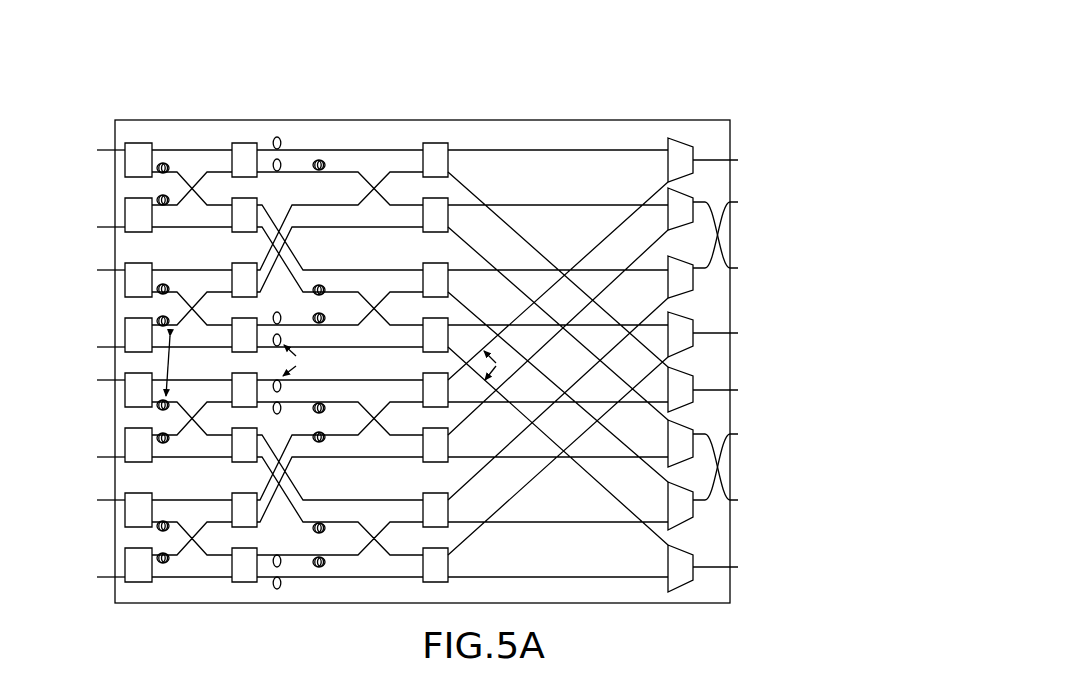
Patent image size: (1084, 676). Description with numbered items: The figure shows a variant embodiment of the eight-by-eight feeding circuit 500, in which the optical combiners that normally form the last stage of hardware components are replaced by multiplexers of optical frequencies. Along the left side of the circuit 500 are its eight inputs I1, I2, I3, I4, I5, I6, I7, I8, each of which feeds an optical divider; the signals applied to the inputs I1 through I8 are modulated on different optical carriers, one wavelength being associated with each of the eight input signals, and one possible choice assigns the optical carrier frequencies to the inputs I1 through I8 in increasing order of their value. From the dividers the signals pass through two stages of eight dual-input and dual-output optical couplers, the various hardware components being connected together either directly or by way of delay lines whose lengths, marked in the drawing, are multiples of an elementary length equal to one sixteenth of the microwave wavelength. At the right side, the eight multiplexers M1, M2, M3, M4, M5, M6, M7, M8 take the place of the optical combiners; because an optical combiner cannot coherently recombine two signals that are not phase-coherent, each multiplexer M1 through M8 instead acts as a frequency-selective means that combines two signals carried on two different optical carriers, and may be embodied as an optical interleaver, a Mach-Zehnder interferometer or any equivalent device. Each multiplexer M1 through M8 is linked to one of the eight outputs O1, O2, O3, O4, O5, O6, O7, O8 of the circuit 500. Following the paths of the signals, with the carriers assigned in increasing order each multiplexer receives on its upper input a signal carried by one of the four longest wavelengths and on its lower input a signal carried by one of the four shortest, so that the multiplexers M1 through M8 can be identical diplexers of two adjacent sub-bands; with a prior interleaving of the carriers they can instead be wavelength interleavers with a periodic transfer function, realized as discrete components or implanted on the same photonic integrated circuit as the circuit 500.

The feeding circuit 500 is at (419, 319).
The input I1 is at (96, 150).
The input I2 is at (96, 227).
The input I3 is at (96, 270).
The input I4 is at (96, 347).
The input I5 is at (96, 380).
The input I6 is at (96, 457).
The input I7 is at (96, 500).
The input I8 is at (96, 577).
The output O1 is at (729, 160).
The output O2 is at (729, 229).
The output O3 is at (729, 241).
The output O4 is at (729, 333).
The output O5 is at (729, 390).
The output O6 is at (729, 461).
The output O7 is at (729, 473).
The output O8 is at (729, 566).
The multiplexer M1 is at (681, 160).
The multiplexer M2 is at (681, 209).
The multiplexer M3 is at (681, 277).
The multiplexer M4 is at (681, 334).
The multiplexer M5 is at (681, 389).
The multiplexer M6 is at (681, 443).
The multiplexer M7 is at (681, 506).
The multiplexer M8 is at (681, 568).